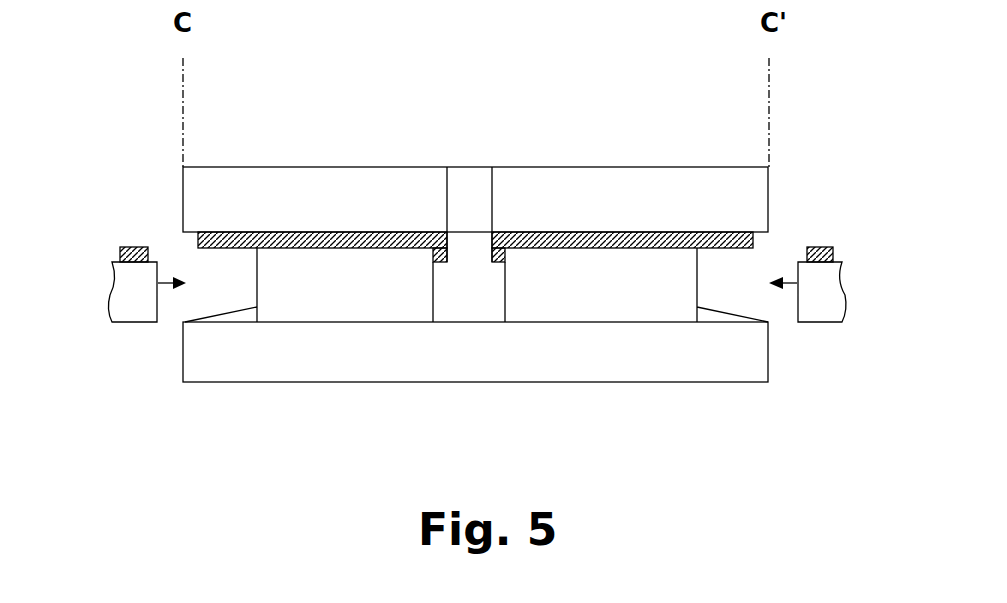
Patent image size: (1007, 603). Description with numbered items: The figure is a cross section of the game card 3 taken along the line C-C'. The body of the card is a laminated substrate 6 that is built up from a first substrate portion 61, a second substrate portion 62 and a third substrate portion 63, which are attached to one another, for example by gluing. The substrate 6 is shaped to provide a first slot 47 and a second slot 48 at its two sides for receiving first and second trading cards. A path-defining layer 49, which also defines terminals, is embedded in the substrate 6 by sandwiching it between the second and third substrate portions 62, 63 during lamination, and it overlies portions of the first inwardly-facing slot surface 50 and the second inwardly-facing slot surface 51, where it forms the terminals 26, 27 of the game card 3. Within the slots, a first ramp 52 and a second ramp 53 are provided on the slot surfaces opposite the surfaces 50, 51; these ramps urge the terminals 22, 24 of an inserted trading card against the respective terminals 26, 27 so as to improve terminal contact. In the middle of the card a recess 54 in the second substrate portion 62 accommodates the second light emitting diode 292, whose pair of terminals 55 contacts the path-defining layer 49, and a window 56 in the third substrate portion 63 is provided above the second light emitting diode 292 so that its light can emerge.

The game card 3 is at (506, 122).
The terminal 26 is at (230, 228).
The terminal 27 is at (721, 252).
The path-defining layer 49 is at (355, 236).
The window 56 is at (490, 196).
The pair of terminals 55 is at (431, 257).
The second light emitting diode 292 is at (455, 293).
The recess 54 is at (429, 293).
The first ramp 52 is at (248, 315).
The second ramp 53 is at (710, 310).
The first substrate portion 61 is at (505, 352).
The second substrate portion 62 is at (530, 292).
The third substrate portion 63 is at (558, 202).
The substrate 6 is at (587, 470).
The first inwardly-facing slot surface 50 is at (212, 252).
The first slot 47 is at (186, 254).
The terminal 22 is at (118, 247).
The terminal 24 is at (812, 248).
The second slot 48 is at (772, 256).
The second inwardly-facing slot surface 51 is at (701, 240).